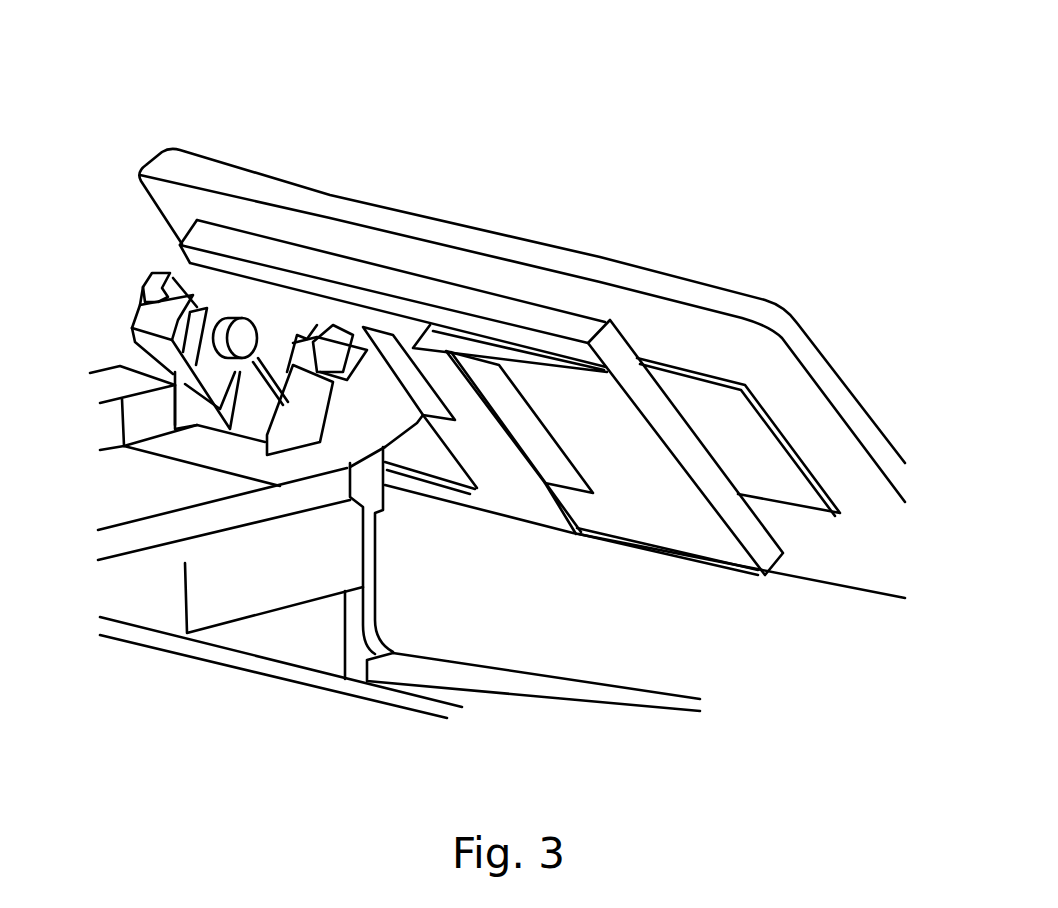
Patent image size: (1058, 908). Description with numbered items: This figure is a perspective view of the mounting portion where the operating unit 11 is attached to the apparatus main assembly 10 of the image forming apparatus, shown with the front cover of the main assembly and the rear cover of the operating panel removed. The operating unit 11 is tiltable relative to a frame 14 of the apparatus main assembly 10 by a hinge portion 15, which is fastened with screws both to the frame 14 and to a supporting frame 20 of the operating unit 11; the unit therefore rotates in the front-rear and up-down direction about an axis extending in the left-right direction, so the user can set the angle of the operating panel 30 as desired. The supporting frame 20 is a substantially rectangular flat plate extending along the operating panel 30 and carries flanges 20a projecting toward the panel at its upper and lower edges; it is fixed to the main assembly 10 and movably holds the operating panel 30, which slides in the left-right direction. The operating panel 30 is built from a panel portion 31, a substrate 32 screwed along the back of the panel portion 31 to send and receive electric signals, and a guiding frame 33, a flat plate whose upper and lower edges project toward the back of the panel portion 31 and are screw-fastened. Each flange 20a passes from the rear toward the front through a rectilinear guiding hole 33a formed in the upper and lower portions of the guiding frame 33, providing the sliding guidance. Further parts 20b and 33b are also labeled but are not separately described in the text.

The apparatus main assembly 10 is at (600, 660).
The operating unit 11 is at (367, 92).
The frame 14 is at (160, 527).
The hinge portion 15 is at (145, 318).
The supporting frame 20 is at (500, 550).
The flange 20a is at (383, 323).
The rail lower wall 20b is at (443, 478).
The operating panel 30 is at (812, 290).
The panel portion 31 is at (653, 278).
The substrate 32 is at (697, 392).
The guiding frame 33 is at (463, 297).
The guiding hole 33a is at (523, 327).
The engaging plate 33b is at (533, 422).